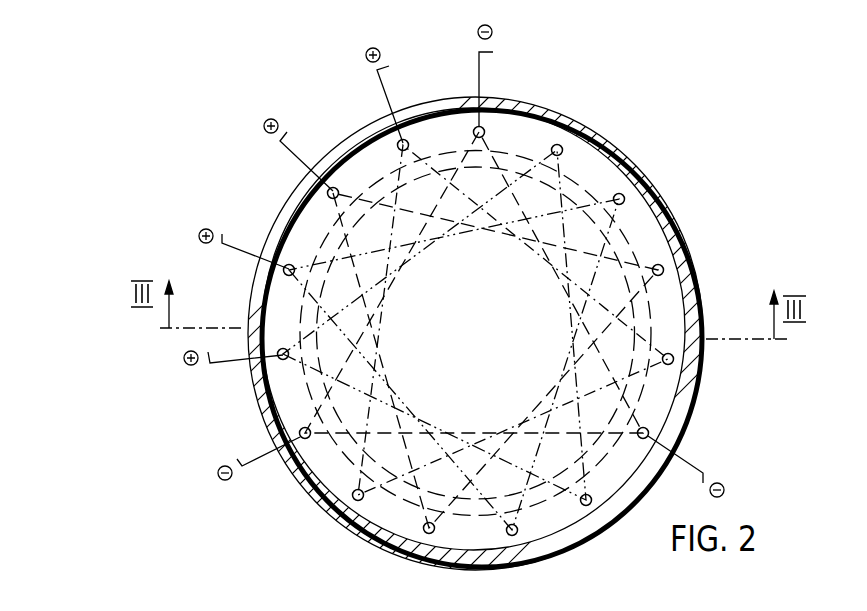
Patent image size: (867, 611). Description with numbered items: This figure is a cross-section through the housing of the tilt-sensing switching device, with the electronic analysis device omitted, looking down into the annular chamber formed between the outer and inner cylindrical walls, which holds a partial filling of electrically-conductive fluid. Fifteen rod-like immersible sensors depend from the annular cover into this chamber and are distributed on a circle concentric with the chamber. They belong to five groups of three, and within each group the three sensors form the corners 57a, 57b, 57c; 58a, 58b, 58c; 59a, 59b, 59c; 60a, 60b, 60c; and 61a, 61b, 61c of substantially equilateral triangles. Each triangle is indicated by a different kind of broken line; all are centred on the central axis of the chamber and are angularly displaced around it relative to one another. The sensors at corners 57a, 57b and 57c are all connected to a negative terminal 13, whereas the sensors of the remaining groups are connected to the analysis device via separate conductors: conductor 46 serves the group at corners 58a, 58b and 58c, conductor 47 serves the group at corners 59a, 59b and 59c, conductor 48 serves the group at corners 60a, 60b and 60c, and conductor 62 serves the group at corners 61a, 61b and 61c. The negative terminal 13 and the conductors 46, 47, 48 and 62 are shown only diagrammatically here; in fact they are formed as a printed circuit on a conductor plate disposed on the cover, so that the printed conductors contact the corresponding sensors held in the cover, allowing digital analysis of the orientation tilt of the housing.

The negative terminal 13 is at (493, 27).
The conductor 46 is at (377, 70).
The conductor 47 is at (280, 141).
The conductor 48 is at (222, 243).
The conductor 62 is at (210, 363).
The corner 57a is at (482, 127).
The corner 57b is at (301, 440).
The corner 57c is at (649, 434).
The corner 58a is at (405, 139).
The corner 58b is at (355, 501).
The corner 58c is at (674, 359).
The corner 59a is at (330, 188).
The corner 59b is at (427, 534).
The corner 59c is at (664, 268).
The corner 60a is at (285, 266).
The corner 60b is at (515, 536).
The corner 60c is at (624, 194).
The corner 61a is at (270, 370).
The corner 61b is at (589, 506).
The corner 61c is at (560, 144).